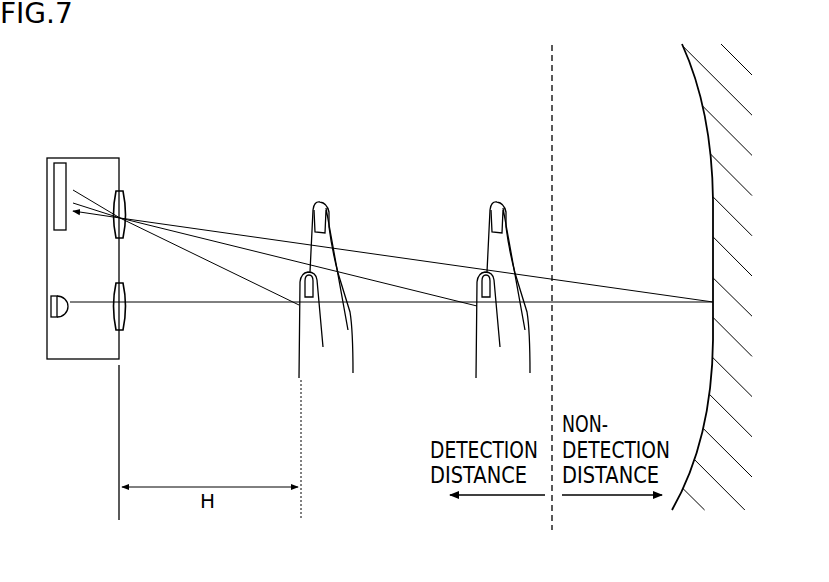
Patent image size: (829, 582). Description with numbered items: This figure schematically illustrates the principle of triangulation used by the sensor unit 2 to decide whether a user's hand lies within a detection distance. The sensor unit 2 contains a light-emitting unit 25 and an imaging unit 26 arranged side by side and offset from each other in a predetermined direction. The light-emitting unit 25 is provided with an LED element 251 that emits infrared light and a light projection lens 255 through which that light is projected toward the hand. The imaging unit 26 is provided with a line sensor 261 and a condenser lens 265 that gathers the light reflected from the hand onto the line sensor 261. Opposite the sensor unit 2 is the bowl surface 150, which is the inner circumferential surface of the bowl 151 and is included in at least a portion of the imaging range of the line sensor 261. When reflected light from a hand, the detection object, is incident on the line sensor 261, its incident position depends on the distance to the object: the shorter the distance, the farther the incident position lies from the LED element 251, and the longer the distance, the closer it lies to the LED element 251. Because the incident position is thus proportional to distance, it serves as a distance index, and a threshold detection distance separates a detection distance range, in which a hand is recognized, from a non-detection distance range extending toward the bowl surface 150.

The sensor unit 2 is at (96, 400).
The light-emitting unit 25 is at (140, 312).
The imaging unit 26 is at (150, 202).
The LED element 251 is at (62, 319).
The light projection lens 255 is at (127, 315).
The line sensor 261 is at (63, 165).
The condenser lens 265 is at (122, 202).
The bowl surface 150 is at (710, 352).
The bowl 151 is at (727, 487).